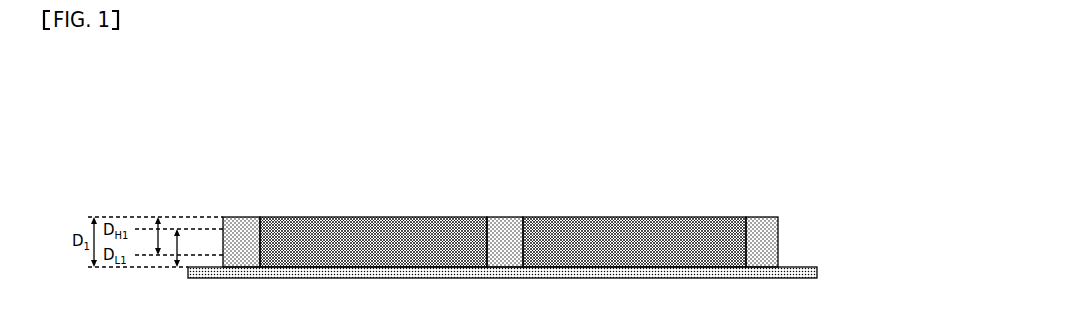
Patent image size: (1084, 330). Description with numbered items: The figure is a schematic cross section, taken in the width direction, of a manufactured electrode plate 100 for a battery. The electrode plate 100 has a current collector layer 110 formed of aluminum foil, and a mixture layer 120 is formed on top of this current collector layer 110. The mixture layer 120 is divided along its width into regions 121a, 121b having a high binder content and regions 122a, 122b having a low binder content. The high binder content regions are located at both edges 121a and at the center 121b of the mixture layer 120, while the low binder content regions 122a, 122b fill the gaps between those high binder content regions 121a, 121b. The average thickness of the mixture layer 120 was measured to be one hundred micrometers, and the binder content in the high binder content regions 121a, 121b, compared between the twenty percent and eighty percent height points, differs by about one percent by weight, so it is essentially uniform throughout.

The electrode plate 100 is at (98, 129).
The current collector layer 110 is at (817, 270).
The mixture layer 120 is at (572, 207).
The region having a high binder content 121a is at (248, 217).
The region having a high binder content 121b is at (499, 217).
The region having a low binder content 122a is at (358, 217).
The region having a low binder content 122b is at (650, 217).